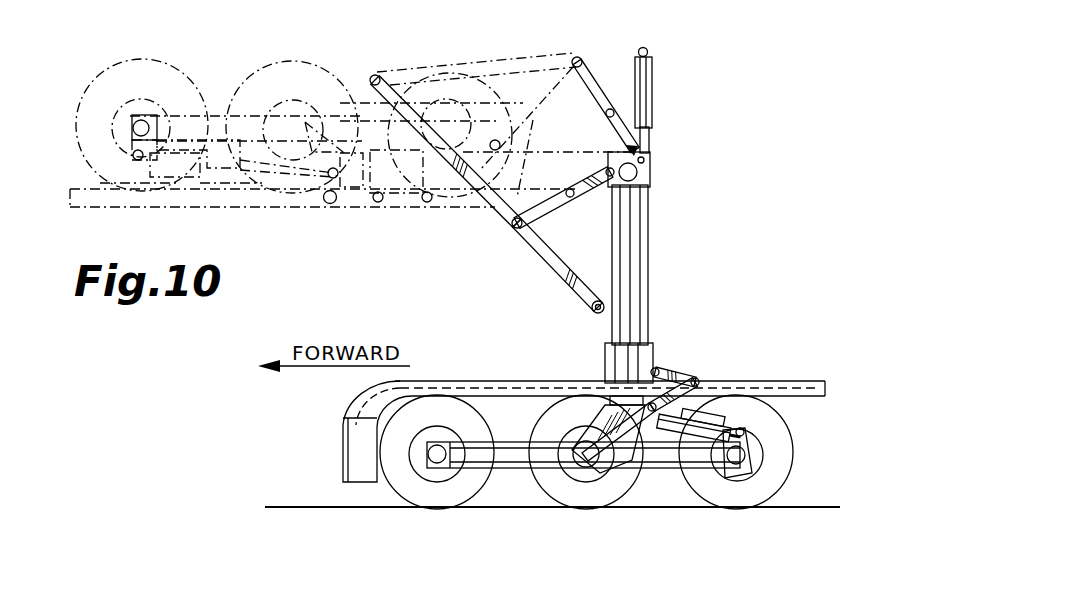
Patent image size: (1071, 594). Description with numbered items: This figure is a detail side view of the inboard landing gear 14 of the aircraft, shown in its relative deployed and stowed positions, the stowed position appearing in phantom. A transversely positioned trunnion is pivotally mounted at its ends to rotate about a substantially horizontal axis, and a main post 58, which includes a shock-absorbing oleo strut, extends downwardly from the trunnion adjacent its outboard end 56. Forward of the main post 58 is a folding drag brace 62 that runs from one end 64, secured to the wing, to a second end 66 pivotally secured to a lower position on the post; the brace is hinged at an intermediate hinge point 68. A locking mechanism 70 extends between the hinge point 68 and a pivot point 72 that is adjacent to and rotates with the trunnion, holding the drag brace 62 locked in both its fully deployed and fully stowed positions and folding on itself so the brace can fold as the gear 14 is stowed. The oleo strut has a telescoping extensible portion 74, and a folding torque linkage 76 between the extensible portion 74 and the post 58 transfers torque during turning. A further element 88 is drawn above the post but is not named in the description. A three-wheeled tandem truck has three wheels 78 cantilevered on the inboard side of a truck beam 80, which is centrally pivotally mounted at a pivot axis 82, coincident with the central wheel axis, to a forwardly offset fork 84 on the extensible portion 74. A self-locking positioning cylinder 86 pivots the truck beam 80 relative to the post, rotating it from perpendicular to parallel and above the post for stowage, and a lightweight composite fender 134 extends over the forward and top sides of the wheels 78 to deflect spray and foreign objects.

The inboard gear 14 is at (700, 318).
The outboard end of trunnion 56 is at (637, 170).
The main post 58 is at (548, 160).
The folding drag brace 62 is at (507, 53).
The one end of drag brace 64 is at (380, 74).
The second end of drag brace 66 is at (594, 310).
The hinge point 68 is at (582, 56).
The locking mechanism 70 is at (603, 72).
The pivot point 72 is at (652, 142).
The extensible portion 74 is at (401, 205).
The folding torque linkage 76 is at (677, 370).
The wheels 78 is at (453, 495).
The truck beam 80 is at (517, 468).
The pivot axis 82 is at (582, 458).
The forwardly offset fork 84 is at (630, 433).
The self-locking positioning cylinder 86 is at (213, 165).
The cylinder 88 is at (652, 90).
The fender 134 is at (413, 380).